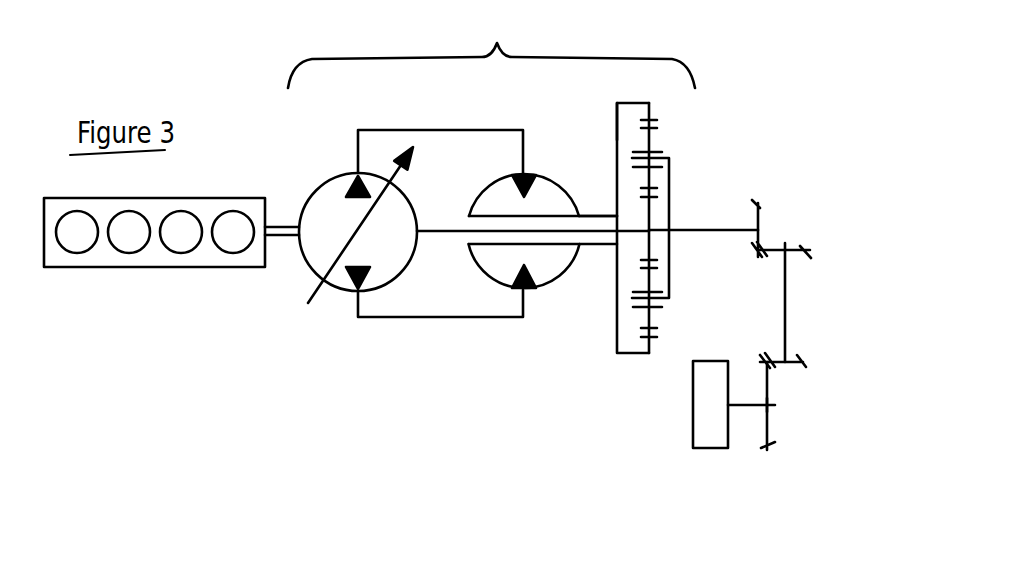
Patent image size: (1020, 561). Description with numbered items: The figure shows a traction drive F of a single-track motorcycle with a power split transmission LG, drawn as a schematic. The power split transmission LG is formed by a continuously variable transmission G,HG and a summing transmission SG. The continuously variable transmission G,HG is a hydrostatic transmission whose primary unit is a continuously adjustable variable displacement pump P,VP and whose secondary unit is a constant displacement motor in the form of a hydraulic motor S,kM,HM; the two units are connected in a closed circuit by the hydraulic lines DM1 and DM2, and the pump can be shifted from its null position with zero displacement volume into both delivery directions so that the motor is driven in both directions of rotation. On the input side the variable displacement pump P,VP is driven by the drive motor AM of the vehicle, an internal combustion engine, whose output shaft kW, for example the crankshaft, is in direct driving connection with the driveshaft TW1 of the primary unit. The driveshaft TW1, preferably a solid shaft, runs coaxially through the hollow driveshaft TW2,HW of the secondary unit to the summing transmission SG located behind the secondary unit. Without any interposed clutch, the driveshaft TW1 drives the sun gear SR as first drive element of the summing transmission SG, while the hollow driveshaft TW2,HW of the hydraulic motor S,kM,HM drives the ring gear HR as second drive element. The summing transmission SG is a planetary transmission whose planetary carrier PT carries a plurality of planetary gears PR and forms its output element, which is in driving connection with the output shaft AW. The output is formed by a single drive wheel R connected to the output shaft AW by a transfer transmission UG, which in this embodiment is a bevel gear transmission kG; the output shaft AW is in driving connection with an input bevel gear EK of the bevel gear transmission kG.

The drive motor AM is at (50, 268).
The output shaft kW is at (277, 218).
The primary unit / variable displacement pump P,VP is at (298, 267).
The hydraulic line DM1 is at (369, 128).
The hydraulic line DM2 is at (364, 321).
The driveshaft TW1 is at (432, 231).
The driveshaft / hollow shaft TW2,HW is at (588, 212).
The secondary unit / constant displacement motor / hydraulic motor S,kM,HM is at (497, 268).
The sun gear SR is at (647, 242).
The ring gear HR is at (615, 92).
The planetary gears PR is at (652, 137).
The planetary carrier PT is at (668, 158).
The output shaft AW is at (695, 223).
The input bevel gear EK is at (758, 205).
The transfer transmission UG is at (797, 218).
The bevel gear transmission kG is at (802, 312).
The drive wheel R is at (712, 435).
The traction drive F is at (196, 396).
The continuously variable transmission / hydrostatic transmission G,HG is at (350, 400).
The summing transmission SG is at (622, 388).
The power split transmission LG is at (491, 44).